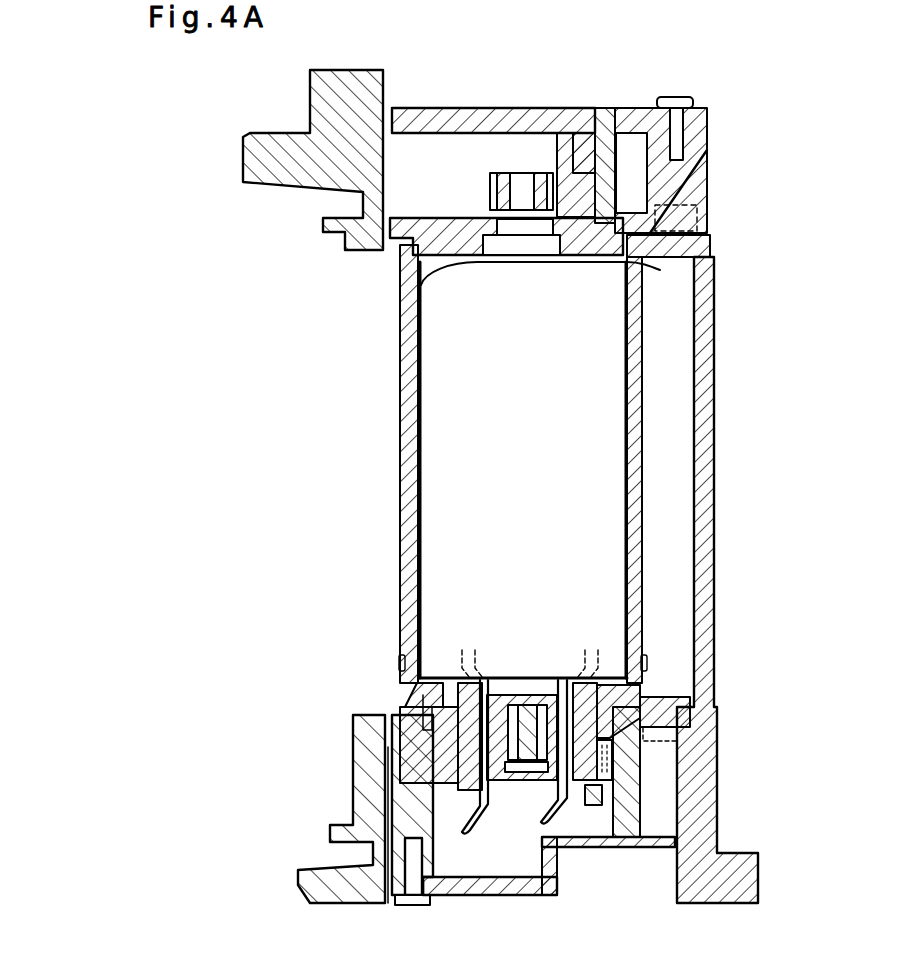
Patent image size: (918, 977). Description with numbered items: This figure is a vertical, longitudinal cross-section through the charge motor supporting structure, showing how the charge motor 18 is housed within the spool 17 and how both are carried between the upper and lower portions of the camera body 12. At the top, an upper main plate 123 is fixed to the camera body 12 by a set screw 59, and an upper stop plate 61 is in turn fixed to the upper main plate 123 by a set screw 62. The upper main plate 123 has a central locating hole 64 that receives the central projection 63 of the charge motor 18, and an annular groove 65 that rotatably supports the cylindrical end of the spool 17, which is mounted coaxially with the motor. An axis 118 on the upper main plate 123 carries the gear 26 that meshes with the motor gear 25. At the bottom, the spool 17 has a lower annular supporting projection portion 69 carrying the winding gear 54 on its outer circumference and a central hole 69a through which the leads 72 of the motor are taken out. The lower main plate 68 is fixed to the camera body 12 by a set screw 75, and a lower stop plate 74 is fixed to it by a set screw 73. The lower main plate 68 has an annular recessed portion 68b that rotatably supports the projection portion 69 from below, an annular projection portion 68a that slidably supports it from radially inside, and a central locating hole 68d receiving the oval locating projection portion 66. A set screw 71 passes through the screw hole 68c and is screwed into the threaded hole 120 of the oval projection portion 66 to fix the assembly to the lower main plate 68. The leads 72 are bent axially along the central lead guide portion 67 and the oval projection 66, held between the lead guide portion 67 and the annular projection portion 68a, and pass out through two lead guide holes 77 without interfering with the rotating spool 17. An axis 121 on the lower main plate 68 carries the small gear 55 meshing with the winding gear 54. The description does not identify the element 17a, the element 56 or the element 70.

The camera body 12 is at (706, 485).
The spool 17 is at (403, 460).
The cylinder outer surface 17a is at (636, 288).
The charge motor 18 is at (432, 527).
The motor gear 25 is at (497, 178).
The gear 26 is at (580, 132).
The winding gear 54 is at (445, 772).
The small gear 55 is at (643, 762).
The bottom plate 56 is at (520, 866).
The set screw 59 is at (697, 209).
The upper stop plate 61 is at (405, 118).
The set screw 62 is at (690, 101).
The central projection 63 is at (421, 284).
The central locating hole 64 is at (495, 256).
The annular groove 65 is at (642, 268).
The oval locating projection portion 66 is at (495, 690).
The central lead guide portion 67 is at (560, 680).
The lower main plate 68 is at (435, 755).
The annular projection portion 68a is at (645, 690).
The annular recessed portion 68b is at (435, 765).
The screw hole 68c is at (523, 680).
The central locating hole 68d is at (640, 648).
The annular supporting projection portion 69 is at (416, 706).
The central hole 69a is at (457, 680).
The stop 70 is at (401, 661).
The set screw 71 is at (506, 775).
The leads 72 is at (466, 838).
The set screw 73 is at (408, 906).
The lower stop plate 74 is at (660, 848).
The set screw 75 is at (645, 738).
The lead guide holes 77 is at (400, 747).
The axis 118 is at (624, 172).
The threaded hole 120 is at (541, 700).
The axis 121 is at (667, 808).
The upper main plate 123 is at (700, 172).